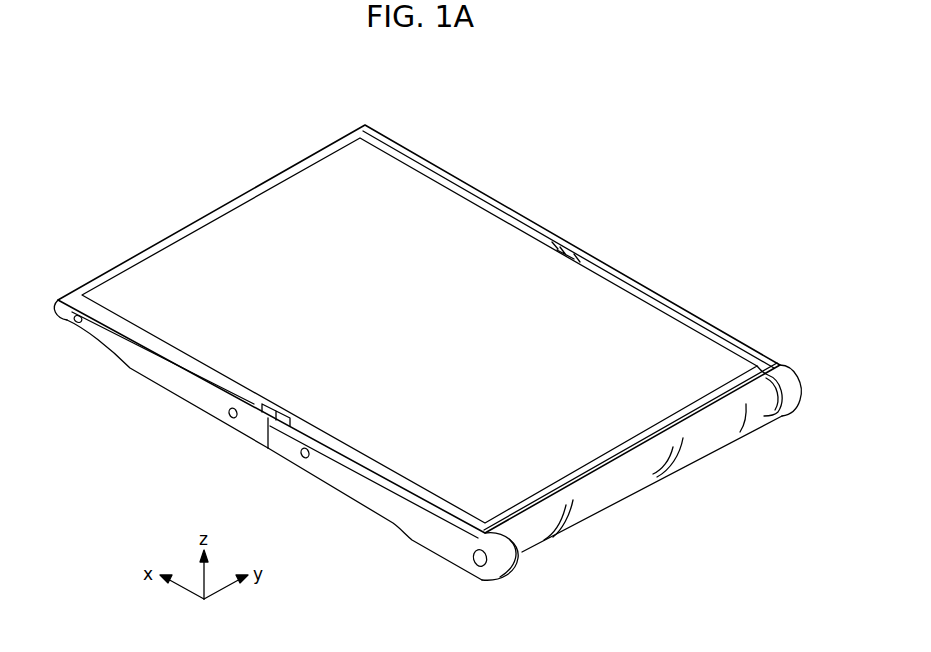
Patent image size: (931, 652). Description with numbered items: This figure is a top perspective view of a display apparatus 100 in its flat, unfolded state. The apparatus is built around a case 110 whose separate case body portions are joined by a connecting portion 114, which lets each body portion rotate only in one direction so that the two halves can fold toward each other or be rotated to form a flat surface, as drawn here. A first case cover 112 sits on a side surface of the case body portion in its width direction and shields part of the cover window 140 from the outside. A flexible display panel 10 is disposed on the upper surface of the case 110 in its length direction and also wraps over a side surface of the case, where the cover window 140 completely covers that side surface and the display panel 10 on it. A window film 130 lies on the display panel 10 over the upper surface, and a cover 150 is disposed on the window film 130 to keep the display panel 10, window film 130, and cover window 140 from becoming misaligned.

The display apparatus 100 is at (182, 153).
The display panel 10 is at (617, 492).
The case 110 is at (154, 411).
The first case cover 112 is at (363, 490).
The connecting portion 114 is at (255, 407).
The window film 130 is at (468, 238).
The cover window 140 is at (672, 478).
The cover 150 is at (612, 278).